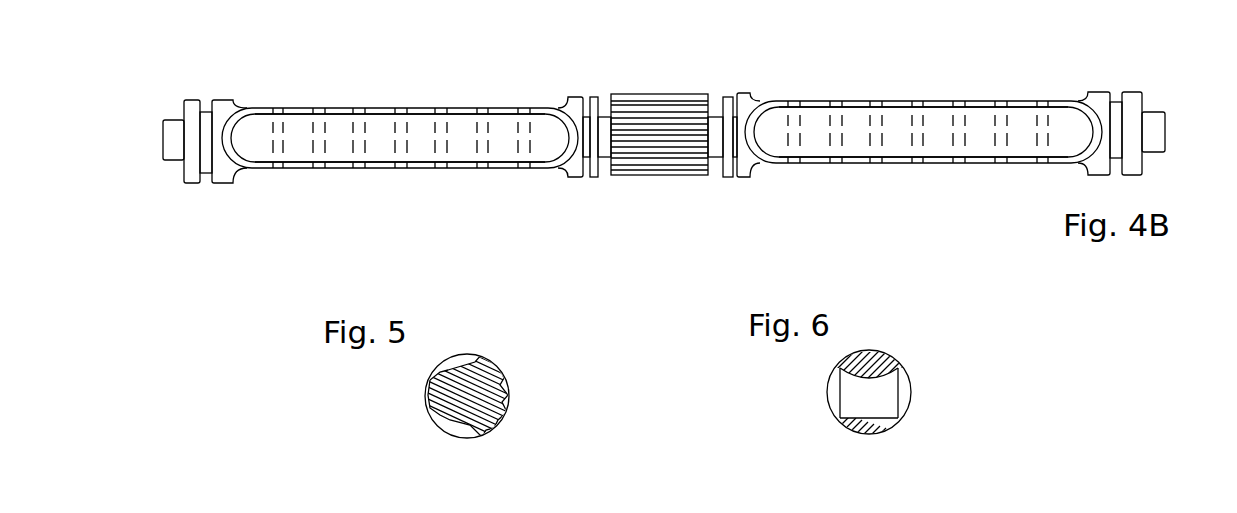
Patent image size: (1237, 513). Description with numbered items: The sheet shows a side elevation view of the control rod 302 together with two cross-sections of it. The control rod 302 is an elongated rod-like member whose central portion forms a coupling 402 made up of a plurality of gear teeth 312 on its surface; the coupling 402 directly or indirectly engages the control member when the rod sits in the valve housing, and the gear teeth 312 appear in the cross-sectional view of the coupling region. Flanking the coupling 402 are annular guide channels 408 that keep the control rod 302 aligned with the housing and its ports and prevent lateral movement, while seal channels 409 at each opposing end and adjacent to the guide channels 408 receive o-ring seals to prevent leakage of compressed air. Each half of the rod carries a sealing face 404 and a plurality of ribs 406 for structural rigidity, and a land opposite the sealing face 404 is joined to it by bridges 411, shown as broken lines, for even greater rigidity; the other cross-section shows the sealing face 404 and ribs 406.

In FIG. 4B, the control rod 302 is at (1096, 60).
In FIG. 5, the control rod 302 is at (447, 438).
In FIG. 6, the control rod 302 is at (852, 417).
In FIG. 5, the gear teeth 312 is at (516, 348).
In FIG. 4B, the coupling 402 is at (668, 97).
In FIG. 4B, the sealing face 404 is at (302, 120).
In FIG. 6, the sealing face 404 is at (880, 355).
In FIG. 4B, the ribs 406 is at (278, 172).
In FIG. 6, the ribs 406 is at (903, 379).
In FIG. 4B, the annular guide channels 408 is at (605, 117).
In FIG. 4B, the seal channels 409 is at (208, 100).
In FIG. 4B, the bridge 411 is at (447, 127).